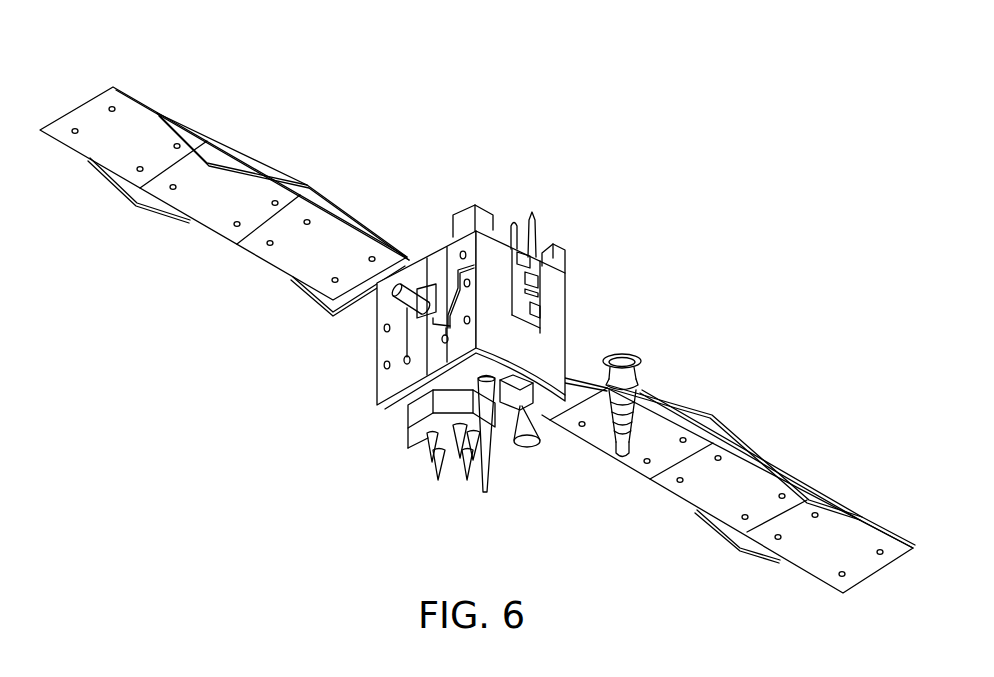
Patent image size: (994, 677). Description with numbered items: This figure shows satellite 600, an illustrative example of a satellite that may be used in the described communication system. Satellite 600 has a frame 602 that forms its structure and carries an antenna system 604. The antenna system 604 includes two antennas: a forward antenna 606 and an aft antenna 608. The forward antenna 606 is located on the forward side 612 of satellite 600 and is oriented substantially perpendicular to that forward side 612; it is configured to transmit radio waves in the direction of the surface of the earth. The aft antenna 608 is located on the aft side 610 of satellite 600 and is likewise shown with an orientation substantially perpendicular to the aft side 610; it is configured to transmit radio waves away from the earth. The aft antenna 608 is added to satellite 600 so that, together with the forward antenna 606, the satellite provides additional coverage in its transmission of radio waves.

The satellite 600 is at (477, 313).
The frame 602 is at (440, 262).
The antenna system 604 is at (394, 448).
The forward antenna 606 is at (460, 473).
The aft antenna 608 is at (520, 226).
The aft side 610 is at (503, 230).
The forward side 612 is at (397, 407).